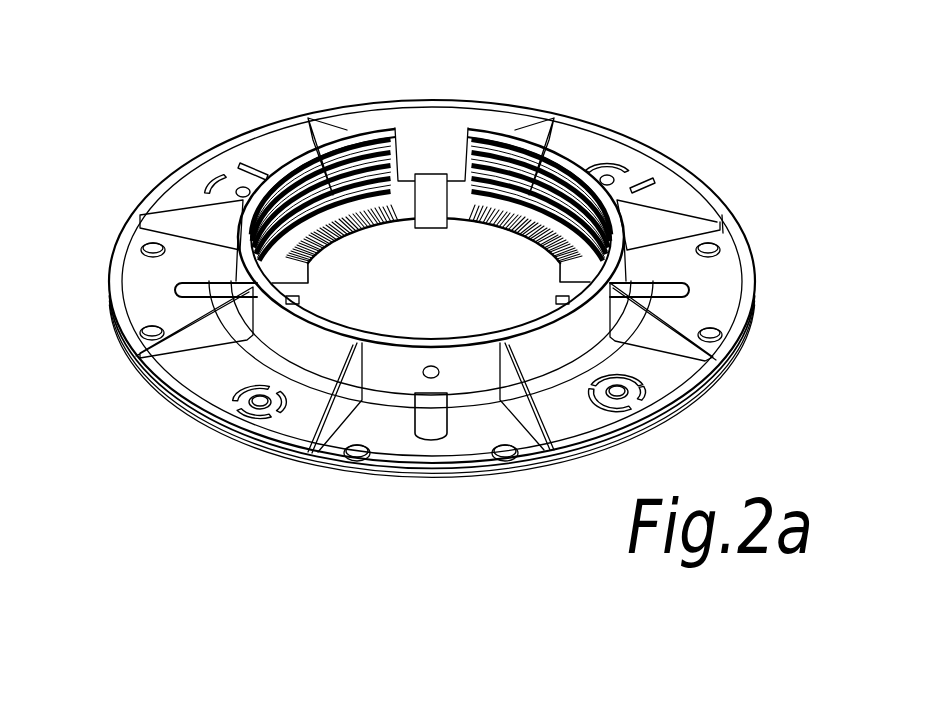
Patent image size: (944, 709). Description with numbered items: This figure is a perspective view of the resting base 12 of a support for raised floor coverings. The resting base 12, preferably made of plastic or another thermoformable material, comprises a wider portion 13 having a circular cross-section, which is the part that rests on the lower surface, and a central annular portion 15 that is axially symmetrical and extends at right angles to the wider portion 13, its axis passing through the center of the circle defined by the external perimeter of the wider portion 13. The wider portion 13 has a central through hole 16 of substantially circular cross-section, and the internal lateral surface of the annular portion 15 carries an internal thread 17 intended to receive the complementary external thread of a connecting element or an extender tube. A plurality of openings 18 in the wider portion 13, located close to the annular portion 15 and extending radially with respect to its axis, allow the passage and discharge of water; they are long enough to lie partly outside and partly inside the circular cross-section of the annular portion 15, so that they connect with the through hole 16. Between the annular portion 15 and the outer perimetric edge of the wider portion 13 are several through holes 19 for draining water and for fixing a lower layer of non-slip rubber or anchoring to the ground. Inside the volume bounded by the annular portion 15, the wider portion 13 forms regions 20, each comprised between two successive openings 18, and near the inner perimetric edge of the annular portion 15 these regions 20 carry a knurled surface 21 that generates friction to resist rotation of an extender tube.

The resting base 12 is at (686, 162).
The wider portion 13 is at (397, 445).
The central annular portion 15 is at (255, 315).
The central through hole 16 is at (483, 228).
The internal thread 17 is at (375, 132).
The openings 18 is at (185, 291).
The through holes 19 is at (150, 238).
The regions 20 is at (298, 262).
The knurled surface 21 is at (330, 188).